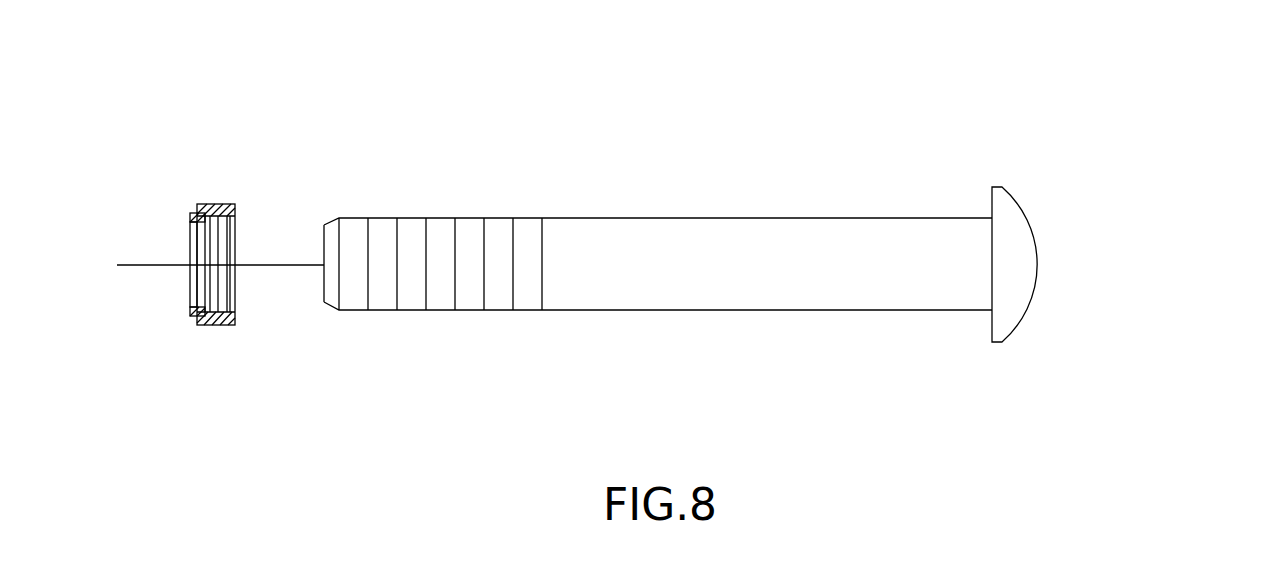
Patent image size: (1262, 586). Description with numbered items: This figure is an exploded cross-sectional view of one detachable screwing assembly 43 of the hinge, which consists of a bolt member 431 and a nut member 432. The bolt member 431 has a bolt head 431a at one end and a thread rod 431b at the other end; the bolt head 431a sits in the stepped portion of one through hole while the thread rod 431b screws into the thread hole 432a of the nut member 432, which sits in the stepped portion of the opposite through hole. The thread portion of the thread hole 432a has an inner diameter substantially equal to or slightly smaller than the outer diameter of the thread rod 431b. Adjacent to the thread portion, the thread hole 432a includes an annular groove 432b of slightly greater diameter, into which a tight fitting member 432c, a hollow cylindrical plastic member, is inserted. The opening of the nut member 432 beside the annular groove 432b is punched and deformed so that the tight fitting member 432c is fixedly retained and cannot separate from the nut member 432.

The detachable screwing assembly 43 is at (510, 155).
The bolt member 431 is at (756, 210).
The bolt head 431a is at (1030, 262).
The thread rod 431b is at (468, 300).
The nut member 432 is at (221, 204).
The thread hole 432a is at (228, 298).
The annular groove 432b is at (192, 315).
The tight fitting member 432c is at (194, 210).